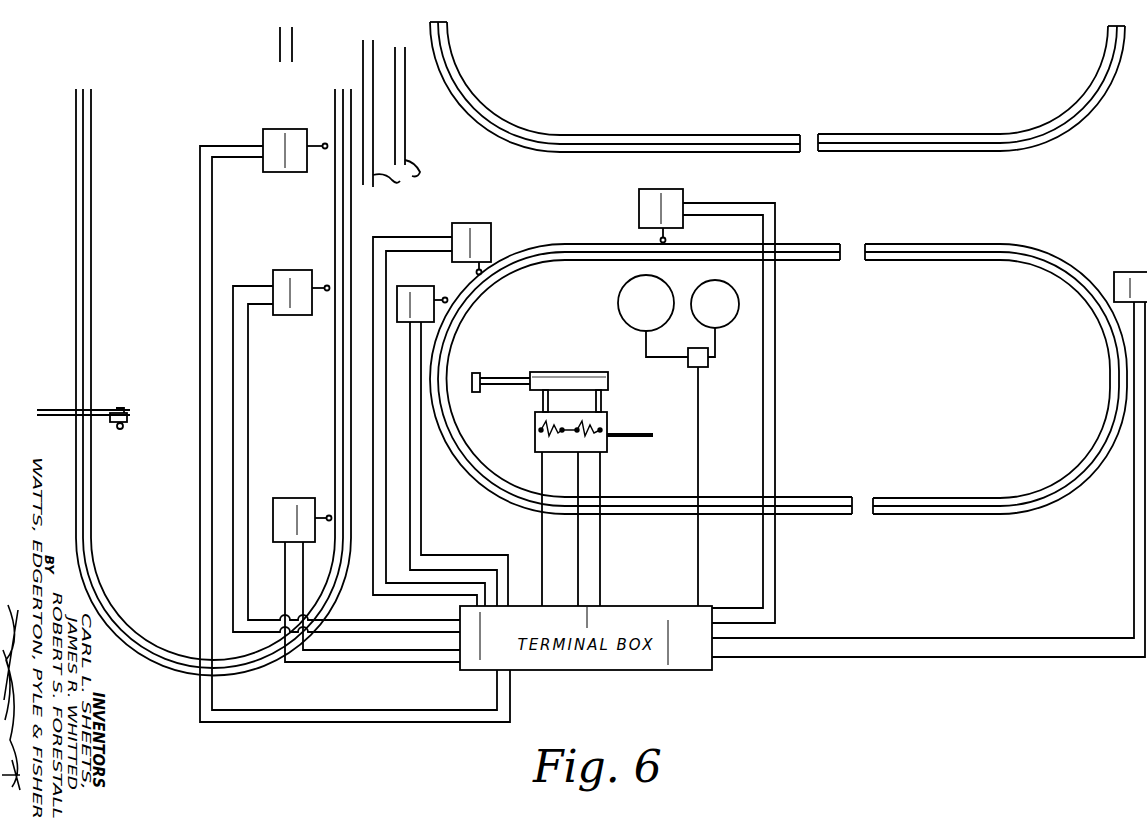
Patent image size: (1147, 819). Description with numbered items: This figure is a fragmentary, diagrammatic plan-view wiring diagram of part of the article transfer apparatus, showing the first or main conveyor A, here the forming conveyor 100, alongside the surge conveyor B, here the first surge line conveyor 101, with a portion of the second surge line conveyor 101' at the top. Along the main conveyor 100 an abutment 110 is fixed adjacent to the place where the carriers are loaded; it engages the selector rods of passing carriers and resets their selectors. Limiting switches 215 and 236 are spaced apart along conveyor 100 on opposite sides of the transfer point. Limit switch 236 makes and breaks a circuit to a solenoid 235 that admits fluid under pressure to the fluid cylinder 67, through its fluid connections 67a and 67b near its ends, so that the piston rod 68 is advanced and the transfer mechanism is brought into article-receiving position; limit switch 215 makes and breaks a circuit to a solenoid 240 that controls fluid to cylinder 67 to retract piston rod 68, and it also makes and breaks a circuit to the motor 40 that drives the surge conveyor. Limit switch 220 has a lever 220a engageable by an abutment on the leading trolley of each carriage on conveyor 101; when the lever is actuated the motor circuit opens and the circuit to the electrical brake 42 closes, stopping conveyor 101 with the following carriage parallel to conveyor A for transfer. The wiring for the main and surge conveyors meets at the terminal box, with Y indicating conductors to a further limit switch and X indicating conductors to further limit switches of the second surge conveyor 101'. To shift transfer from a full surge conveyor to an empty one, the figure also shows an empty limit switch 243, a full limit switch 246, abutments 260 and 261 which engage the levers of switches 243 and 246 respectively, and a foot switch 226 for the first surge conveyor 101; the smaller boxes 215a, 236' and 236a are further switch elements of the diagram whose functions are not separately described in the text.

The first conveyor A is at (93, 232).
The surge conveyor B is at (906, 245).
The conductors to limit switches 243' and 246' X is at (391, 120).
The conductors to limit switch 215' Y is at (278, 42).
The forming conveyor 100 is at (223, 668).
The surge line conveyor 101 is at (648, 397).
The second surge line conveyor 101' is at (777, 87).
The abutment 110 is at (130, 415).
The limit switch 215 is at (288, 277).
The relay contact pin 215a is at (324, 293).
The limit switch 220 is at (639, 205).
The lever 220a is at (657, 233).
The foot switch 226 is at (1123, 272).
The solenoid 235 is at (597, 428).
The limit switch 236 is at (294, 496).
The relay box 236' is at (293, 135).
The relay contact pin 236a is at (327, 513).
The solenoid 240 is at (547, 437).
The empty limit switch 243 is at (417, 297).
The full limit switch 246 is at (473, 247).
The abutment 260 is at (450, 305).
The abutment 261 is at (1097, 483).
The motor 40 is at (628, 293).
The electrical brake 42 is at (710, 293).
The fluid cylinder 67 is at (577, 377).
The fluid connection 67a is at (607, 404).
The fluid connection 67b is at (543, 403).
The piston rod 68 is at (507, 378).